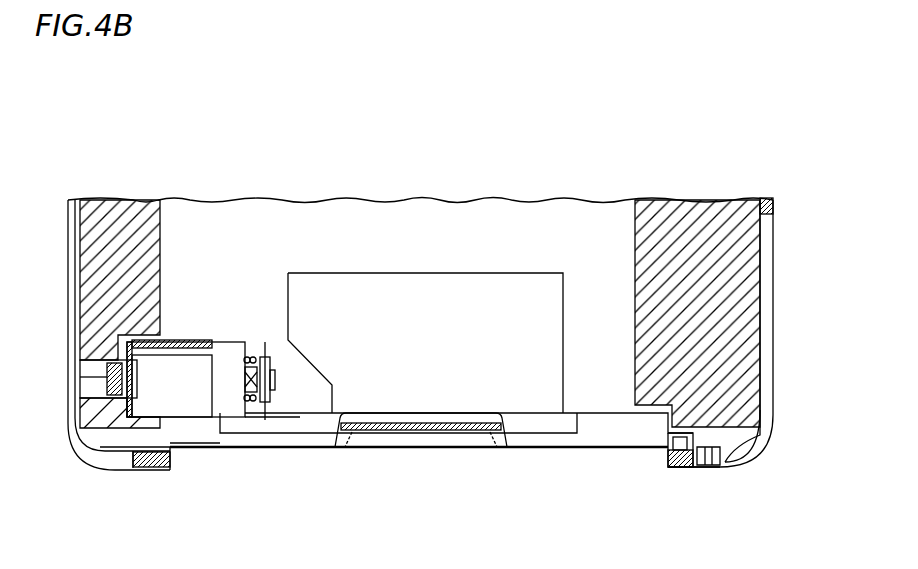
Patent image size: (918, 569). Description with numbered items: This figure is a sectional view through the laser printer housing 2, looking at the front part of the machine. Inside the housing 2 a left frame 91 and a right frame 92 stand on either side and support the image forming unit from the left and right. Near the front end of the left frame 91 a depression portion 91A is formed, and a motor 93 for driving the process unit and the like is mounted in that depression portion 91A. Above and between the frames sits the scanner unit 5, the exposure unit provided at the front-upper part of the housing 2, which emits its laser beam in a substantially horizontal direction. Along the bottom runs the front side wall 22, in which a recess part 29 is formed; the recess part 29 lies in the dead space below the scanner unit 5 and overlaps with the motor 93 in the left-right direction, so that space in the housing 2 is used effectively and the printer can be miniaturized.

The housing 2 is at (774, 215).
The scanner unit 5 is at (438, 295).
The front side wall 22 is at (541, 452).
The recess part 29 is at (420, 452).
The left frame 91 is at (158, 250).
The depression portion 91A is at (150, 322).
The right frame 92 is at (635, 260).
The motor 93 is at (232, 354).